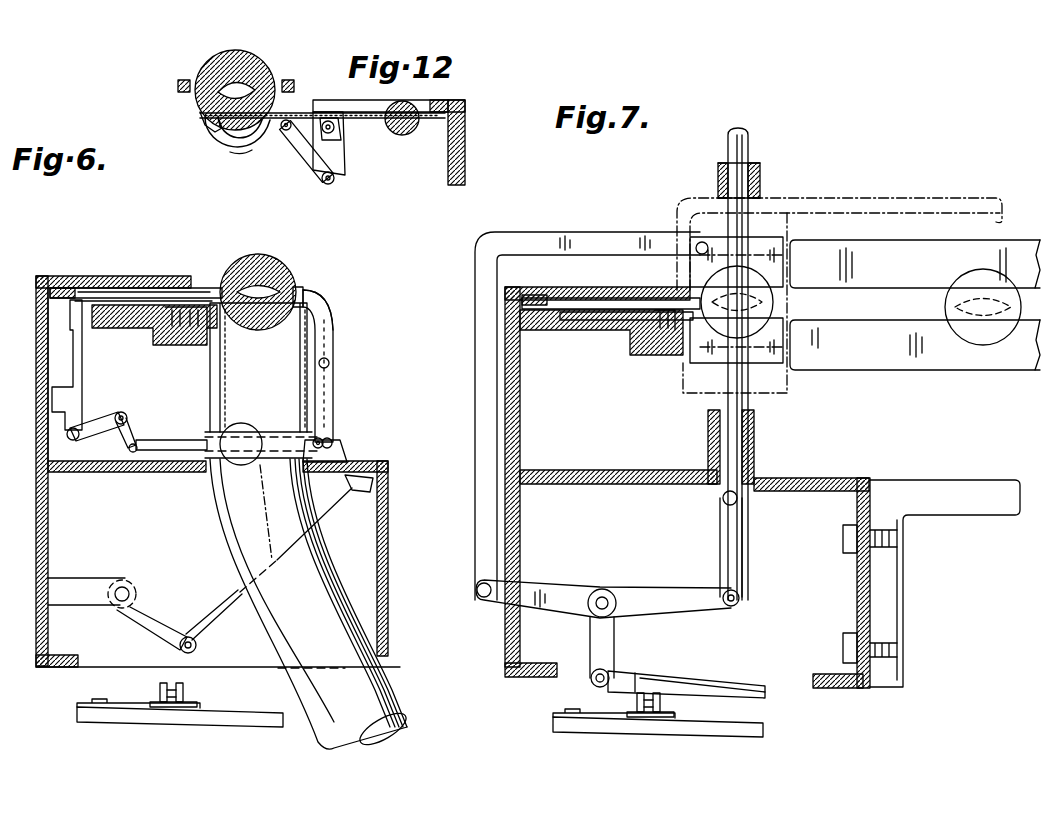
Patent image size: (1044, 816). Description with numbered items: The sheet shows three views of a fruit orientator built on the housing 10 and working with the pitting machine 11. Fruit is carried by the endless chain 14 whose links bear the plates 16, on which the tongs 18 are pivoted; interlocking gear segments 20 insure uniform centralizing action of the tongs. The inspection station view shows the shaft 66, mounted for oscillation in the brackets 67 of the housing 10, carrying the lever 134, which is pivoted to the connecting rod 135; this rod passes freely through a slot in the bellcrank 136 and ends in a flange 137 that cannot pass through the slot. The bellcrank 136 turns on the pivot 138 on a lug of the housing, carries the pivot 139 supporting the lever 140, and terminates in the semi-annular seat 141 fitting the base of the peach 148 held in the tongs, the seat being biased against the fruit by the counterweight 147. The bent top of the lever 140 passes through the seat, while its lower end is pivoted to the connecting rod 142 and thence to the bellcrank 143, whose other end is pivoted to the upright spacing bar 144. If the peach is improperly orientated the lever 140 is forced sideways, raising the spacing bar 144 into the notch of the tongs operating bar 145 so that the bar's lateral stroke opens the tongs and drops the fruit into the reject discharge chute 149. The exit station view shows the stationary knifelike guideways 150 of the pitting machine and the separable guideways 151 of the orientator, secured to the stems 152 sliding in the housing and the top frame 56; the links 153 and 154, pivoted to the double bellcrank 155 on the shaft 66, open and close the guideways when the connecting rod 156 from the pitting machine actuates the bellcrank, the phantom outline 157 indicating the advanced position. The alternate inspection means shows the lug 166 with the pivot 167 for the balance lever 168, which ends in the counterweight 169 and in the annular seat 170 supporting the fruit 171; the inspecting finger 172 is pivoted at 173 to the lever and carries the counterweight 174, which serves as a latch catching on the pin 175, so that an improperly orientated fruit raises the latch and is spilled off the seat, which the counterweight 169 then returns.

In FIG. 12, the housing 10 is at (466, 145).
In FIG. 6, the housing 10 is at (388, 559).
In FIG. 7, the housing 10 is at (755, 438).
In FIG. 7, the pitting machine 11 is at (946, 511).
In FIG. 6, the endless chain 14 is at (184, 690).
In FIG. 7, the endless chain 14 is at (662, 705).
In FIG. 6, the plates 16 is at (158, 717).
In FIG. 7, the plates 16 is at (658, 729).
In FIG. 12, the tongs 18 is at (178, 86).
In FIG. 6, the tongs 18 is at (207, 286).
In FIG. 7, the tongs 18 is at (590, 304).
In FIG. 6, the gear segments 20 is at (86, 292).
In FIG. 7, the top frame 56 is at (761, 180).
In FIG. 6, the shaft 66 is at (128, 590).
In FIG. 7, the shaft 66 is at (605, 600).
In FIG. 6, the brackets 67 is at (71, 582).
In FIG. 6, the lever 134 is at (154, 613).
In FIG. 6, the connecting rod 135 is at (212, 624).
In FIG. 6, the bellcrank 136 is at (336, 322).
In FIG. 6, the flange 137 is at (385, 488).
In FIG. 6, the pivot 138 is at (326, 441).
In FIG. 6, the pivot 139 is at (330, 364).
In FIG. 6, the lever 140 is at (324, 294).
In FIG. 6, the semi-annular seat 141 is at (304, 288).
In FIG. 6, the connecting rod 142 is at (153, 448).
In FIG. 6, the bellcrank 143 is at (127, 413).
In FIG. 6, the spacing bar 144 is at (83, 357).
In FIG. 6, the tongs operating bar 145 is at (68, 287).
In FIG. 7, the tongs operating bar 145 is at (556, 280).
In FIG. 6, the counterweight 147 is at (240, 465).
In FIG. 6, the peach 148 is at (268, 256).
In FIG. 6, the reject discharge chute 149 is at (322, 564).
In FIG. 7, the stationary guideways 150 is at (923, 276).
In FIG. 7, the separable guideways 151 is at (775, 244).
In FIG. 7, the stems 152 is at (750, 138).
In FIG. 7, the link 153 is at (476, 324).
In FIG. 7, the link 154 is at (734, 553).
In FIG. 7, the double bellcrank 155 is at (552, 588).
In FIG. 7, the connecting rod 156 is at (704, 684).
In FIG. 7, the carrier (phantom) 157 is at (914, 206).
In FIG. 12, the lug 166 is at (346, 150).
In FIG. 12, the pivot 167 is at (341, 135).
In FIG. 12, the balance lever 168 is at (335, 127).
In FIG. 12, the counterweight 169 is at (406, 131).
In FIG. 12, the annular seat 170 is at (233, 133).
In FIG. 12, the fruit 171 is at (208, 66).
In FIG. 12, the inspecting finger 172 is at (244, 150).
In FIG. 12, the pivot 173 is at (289, 132).
In FIG. 12, the counterweight 174 is at (312, 163).
In FIG. 12, the pin 175 is at (333, 183).